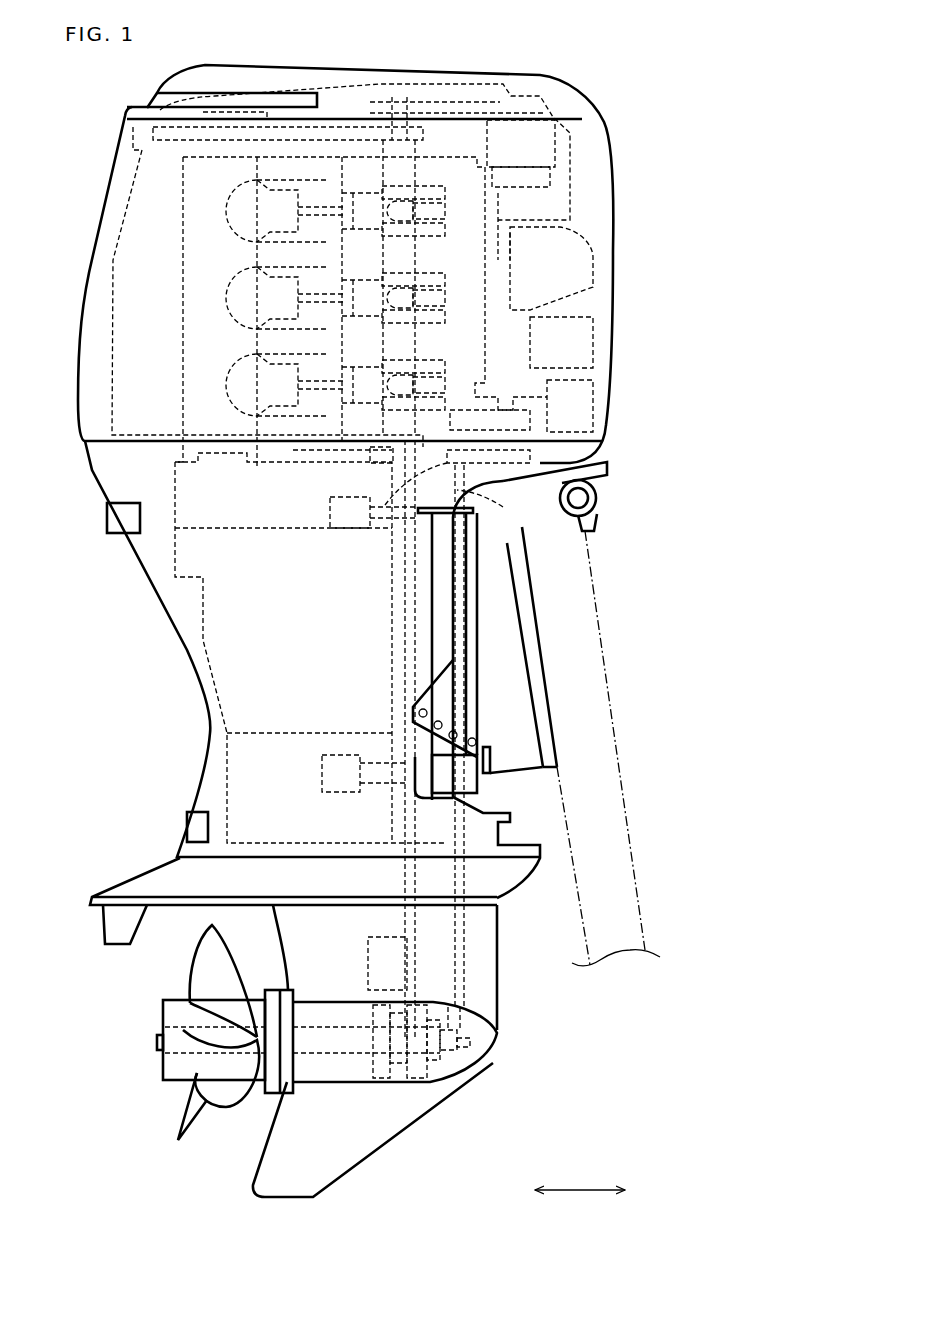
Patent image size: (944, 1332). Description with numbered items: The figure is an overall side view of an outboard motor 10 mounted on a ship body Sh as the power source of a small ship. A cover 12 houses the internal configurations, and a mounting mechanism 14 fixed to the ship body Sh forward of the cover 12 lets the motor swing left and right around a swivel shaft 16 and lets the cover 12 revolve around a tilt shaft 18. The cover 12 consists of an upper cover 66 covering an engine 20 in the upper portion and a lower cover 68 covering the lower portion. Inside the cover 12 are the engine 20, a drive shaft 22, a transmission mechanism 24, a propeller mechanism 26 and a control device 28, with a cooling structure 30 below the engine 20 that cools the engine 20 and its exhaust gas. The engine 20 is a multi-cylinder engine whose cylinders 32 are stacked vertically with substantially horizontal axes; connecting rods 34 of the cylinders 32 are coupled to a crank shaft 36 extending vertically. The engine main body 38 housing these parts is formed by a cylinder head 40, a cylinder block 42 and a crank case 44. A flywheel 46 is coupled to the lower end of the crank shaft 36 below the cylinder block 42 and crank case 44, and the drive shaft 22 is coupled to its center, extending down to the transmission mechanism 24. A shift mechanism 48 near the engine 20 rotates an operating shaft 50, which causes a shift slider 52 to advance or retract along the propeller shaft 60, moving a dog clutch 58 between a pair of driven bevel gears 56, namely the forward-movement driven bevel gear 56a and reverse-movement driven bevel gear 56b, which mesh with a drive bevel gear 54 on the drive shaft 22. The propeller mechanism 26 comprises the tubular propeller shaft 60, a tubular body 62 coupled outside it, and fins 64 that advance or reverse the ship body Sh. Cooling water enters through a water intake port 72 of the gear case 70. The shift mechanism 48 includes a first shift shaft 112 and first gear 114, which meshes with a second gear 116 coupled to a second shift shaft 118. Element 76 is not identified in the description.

The outboard motor 10 is at (491, 41).
The cover 12 is at (90, 164).
The mounting mechanism 14 is at (607, 493).
The swivel shaft 16 is at (478, 660).
The tilt shaft 18 is at (593, 517).
The engine 20 is at (587, 223).
The drive shaft 22 is at (405, 598).
The transmission mechanism 24 is at (432, 1093).
The propeller mechanism 26 is at (170, 1155).
The control device 28 is at (597, 402).
The cooling structure 30 is at (188, 598).
The cylinder 32 is at (226, 211).
The connecting rod 34 is at (305, 205).
The crank shaft 36 is at (447, 373).
The engine main body 38 is at (178, 248).
The cylinder head 40 is at (183, 408).
The cylinder block 42 is at (290, 446).
The crank case 44 is at (490, 275).
The flywheel 46 is at (367, 450).
The shift mechanism 48 is at (557, 452).
The operating shaft 50 is at (460, 879).
The shift slider 52 is at (450, 1063).
The drive bevel gear 54 is at (410, 1007).
The driven bevel gears 56 is at (386, 1098).
The forward-movement driven bevel gear 56a is at (416, 1080).
The reverse-movement driven bevel gear 56b is at (345, 1065).
The dog clutch 58 is at (372, 1032).
The propeller shaft 60 is at (314, 1055).
The tubular body 62 is at (180, 1080).
The fin 64 is at (180, 1120).
The upper cover 66 is at (73, 345).
The lower cover 68 is at (190, 720).
The gear case 70 is at (499, 1000).
The water intake port 72 is at (380, 960).
The electrical component 76 is at (597, 338).
The first shift shaft 112 is at (535, 440).
The first gear 114 is at (487, 474).
The second gear 116 is at (385, 505).
The second shift shaft 118 is at (503, 507).
The ship body Sh is at (630, 843).